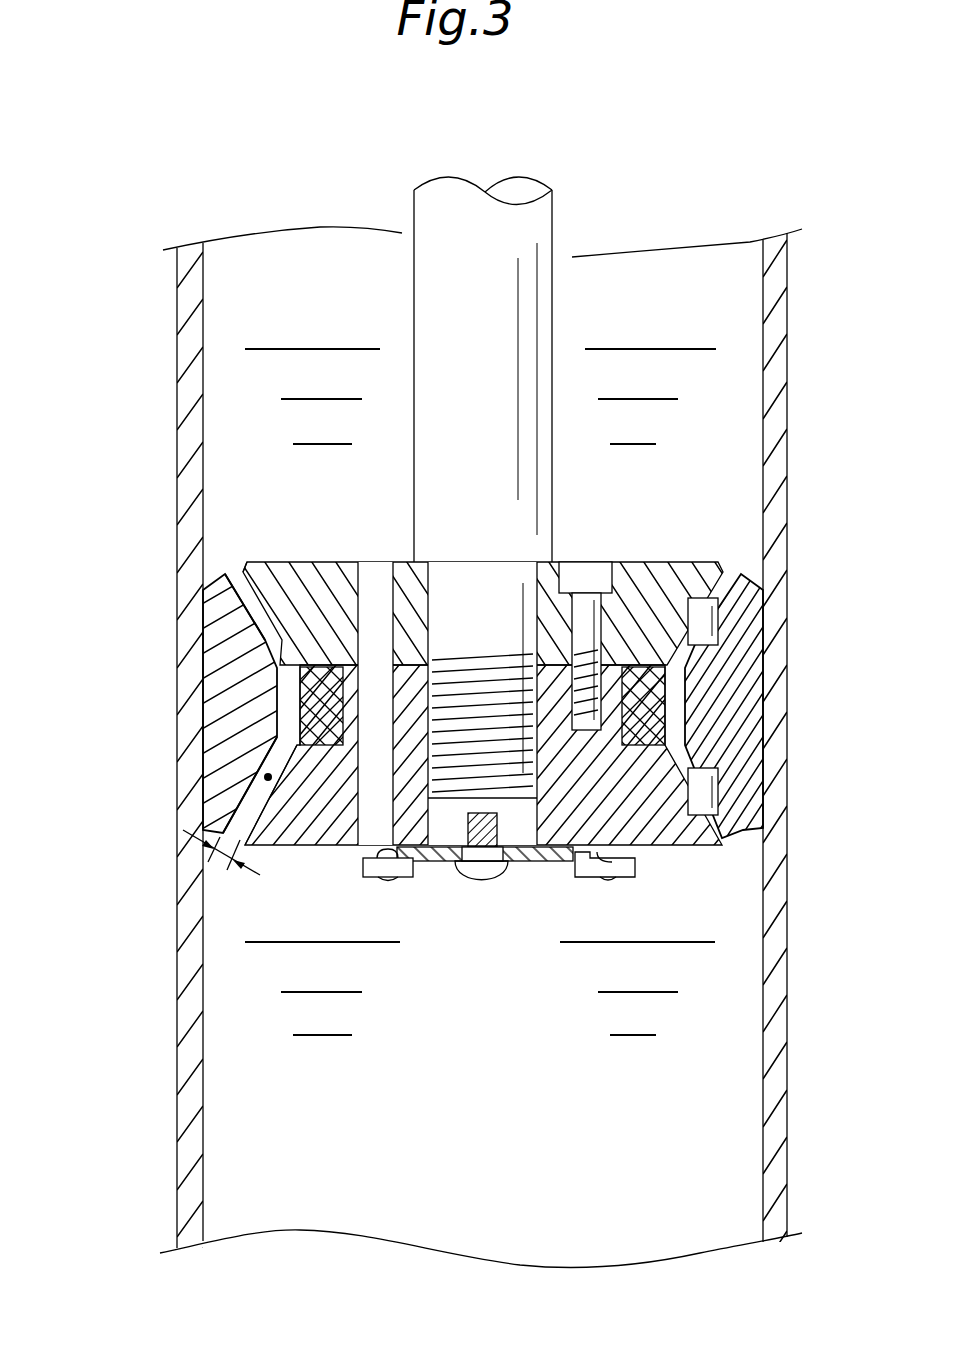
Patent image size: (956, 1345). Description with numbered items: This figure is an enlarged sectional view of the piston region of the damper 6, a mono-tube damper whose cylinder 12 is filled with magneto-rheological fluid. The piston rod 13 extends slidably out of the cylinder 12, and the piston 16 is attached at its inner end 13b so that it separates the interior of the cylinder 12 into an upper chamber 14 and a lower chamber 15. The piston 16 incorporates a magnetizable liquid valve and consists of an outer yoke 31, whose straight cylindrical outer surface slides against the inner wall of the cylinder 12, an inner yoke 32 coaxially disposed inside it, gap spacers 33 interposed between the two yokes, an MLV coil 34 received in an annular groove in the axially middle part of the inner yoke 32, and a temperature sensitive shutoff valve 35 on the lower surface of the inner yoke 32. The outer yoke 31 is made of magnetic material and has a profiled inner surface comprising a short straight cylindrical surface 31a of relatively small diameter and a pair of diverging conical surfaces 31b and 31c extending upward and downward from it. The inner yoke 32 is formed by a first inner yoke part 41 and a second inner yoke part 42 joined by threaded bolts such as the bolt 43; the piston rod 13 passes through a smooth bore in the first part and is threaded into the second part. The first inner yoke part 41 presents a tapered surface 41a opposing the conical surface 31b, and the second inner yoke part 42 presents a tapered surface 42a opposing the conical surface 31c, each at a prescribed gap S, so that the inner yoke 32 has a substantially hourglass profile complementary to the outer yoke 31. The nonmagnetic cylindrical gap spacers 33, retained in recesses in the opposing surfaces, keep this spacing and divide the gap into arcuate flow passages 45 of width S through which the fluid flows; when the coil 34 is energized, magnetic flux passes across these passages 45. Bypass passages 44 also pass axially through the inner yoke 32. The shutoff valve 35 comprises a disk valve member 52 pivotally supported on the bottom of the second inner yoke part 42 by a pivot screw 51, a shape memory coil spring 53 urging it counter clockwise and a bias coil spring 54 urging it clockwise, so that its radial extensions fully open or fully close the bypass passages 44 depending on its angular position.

The damper 6 is at (132, 193).
The cylinder 12 is at (185, 976).
The piston rod 13 is at (545, 228).
The threaded end portion of piston rod 13b is at (485, 625).
The upper chamber 14 is at (735, 316).
The lower chamber 15 is at (718, 1132).
The piston 16 is at (484, 713).
The outer yoke 31 is at (183, 693).
The short straight cylindrical surface 31a is at (293, 700).
The upper diverging conical surface 31b is at (237, 592).
The lower diverging conical surface 31c is at (262, 790).
The inner yoke 32 is at (496, 645).
The gap spacer 33 is at (722, 618).
The MLV coil 34 is at (662, 712).
The temperature sensitive shutoff valve 35 is at (601, 925).
The first inner yoke part 41 is at (692, 563).
The tapered surface 41a is at (248, 580).
The second inner yoke part 42 is at (690, 858).
The tapered surface 42a is at (250, 820).
The fastening bolt 43 is at (602, 565).
The bypass passage 44 is at (375, 585).
The arcuate flow passage 45 is at (264, 776).
The pivot screw 51 is at (480, 880).
The disk valve member 52 is at (540, 862).
The shape memory coil spring 53 is at (388, 882).
The bias coil spring 54 is at (605, 882).
The gap S is at (232, 867).